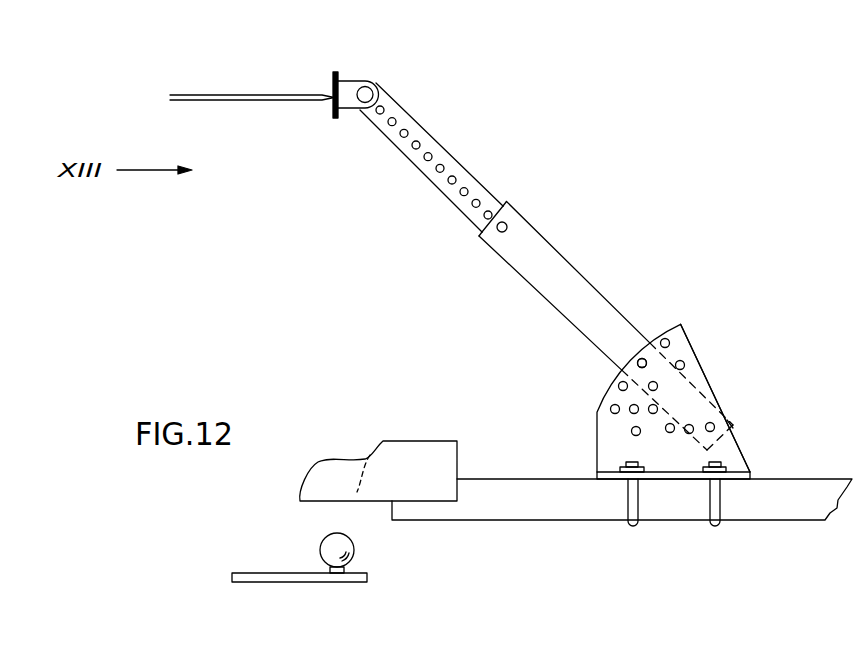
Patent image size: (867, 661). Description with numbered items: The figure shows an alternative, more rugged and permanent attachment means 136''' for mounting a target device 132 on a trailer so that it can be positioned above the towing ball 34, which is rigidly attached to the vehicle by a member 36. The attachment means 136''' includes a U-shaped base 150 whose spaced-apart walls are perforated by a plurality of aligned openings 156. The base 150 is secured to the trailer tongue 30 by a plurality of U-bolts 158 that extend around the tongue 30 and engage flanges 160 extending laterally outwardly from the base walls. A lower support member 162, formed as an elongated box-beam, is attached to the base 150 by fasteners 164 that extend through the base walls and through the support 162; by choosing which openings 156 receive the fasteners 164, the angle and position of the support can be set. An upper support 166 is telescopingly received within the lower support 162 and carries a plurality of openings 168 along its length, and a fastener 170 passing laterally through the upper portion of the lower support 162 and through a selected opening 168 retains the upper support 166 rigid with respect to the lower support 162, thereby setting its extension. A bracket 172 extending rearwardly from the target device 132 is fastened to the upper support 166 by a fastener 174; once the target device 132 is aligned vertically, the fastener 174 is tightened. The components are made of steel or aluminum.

The tongue 30 is at (545, 479).
The towing ball 34 is at (325, 545).
The member 36 is at (234, 573).
The target device 132 is at (339, 72).
The attachment means 136''' is at (576, 218).
The U-shaped base 150 is at (736, 470).
The aligned openings 156 is at (665, 338).
The U-bolts 158 is at (720, 498).
The flanges 160 is at (727, 450).
The lower support member 162 is at (590, 288).
The fasteners 164 is at (640, 362).
The upper support 166 is at (435, 148).
The openings 168 is at (403, 135).
The fastener 170 is at (501, 233).
The bracket 172 is at (348, 88).
The fastener 174 is at (367, 94).